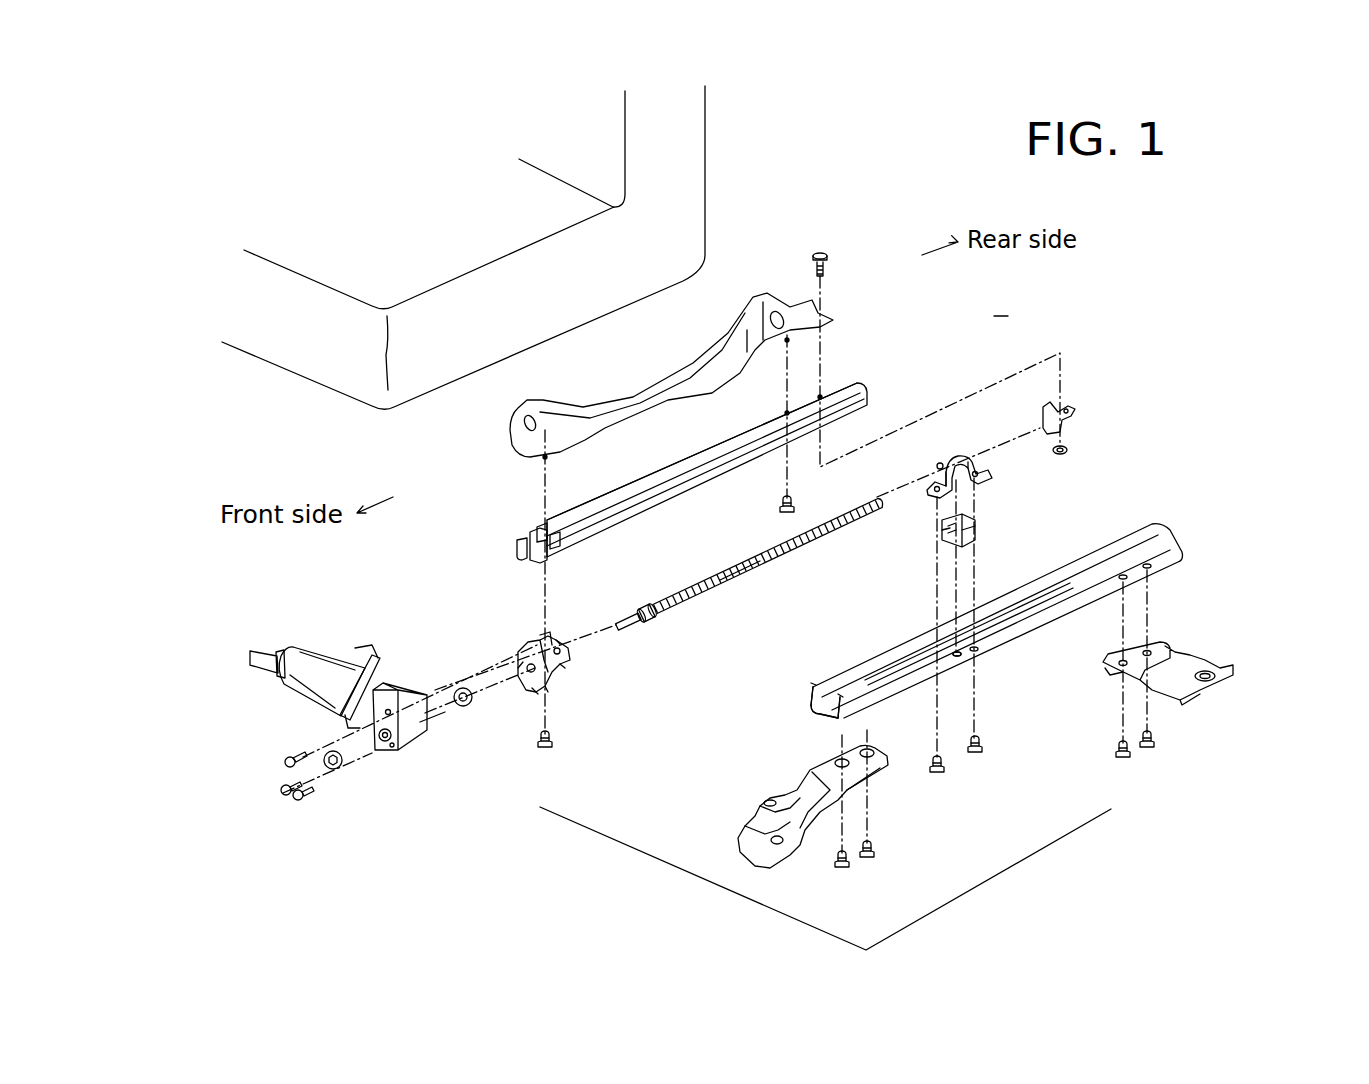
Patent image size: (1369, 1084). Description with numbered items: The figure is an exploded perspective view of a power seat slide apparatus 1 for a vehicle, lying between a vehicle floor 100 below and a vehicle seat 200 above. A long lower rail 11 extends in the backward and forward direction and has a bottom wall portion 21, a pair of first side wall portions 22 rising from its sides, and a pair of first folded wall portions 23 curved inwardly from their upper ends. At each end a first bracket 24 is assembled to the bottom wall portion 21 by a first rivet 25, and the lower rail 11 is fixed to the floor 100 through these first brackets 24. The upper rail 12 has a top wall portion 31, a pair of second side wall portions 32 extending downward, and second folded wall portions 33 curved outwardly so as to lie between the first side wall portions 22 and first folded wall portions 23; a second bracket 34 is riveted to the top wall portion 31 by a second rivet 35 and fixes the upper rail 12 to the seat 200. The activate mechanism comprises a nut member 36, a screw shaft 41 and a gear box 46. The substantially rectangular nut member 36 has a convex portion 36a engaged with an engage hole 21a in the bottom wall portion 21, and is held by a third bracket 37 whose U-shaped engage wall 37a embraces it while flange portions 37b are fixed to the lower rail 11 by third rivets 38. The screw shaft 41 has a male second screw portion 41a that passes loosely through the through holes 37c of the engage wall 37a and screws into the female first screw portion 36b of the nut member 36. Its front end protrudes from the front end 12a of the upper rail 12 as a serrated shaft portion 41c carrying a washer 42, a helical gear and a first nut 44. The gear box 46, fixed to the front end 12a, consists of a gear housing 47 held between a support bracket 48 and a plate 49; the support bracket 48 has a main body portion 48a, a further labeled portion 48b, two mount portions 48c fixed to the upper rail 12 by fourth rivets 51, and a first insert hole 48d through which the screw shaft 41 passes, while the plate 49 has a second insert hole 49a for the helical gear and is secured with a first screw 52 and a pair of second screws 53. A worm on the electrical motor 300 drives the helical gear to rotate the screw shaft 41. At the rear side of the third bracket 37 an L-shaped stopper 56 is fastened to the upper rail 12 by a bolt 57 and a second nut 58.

The power seat slide apparatus 1 is at (990, 329).
The lower rail 11 is at (1180, 523).
The upper rail 12 is at (858, 370).
The front end 12a is at (537, 527).
The bottom wall portion 21 is at (827, 722).
The engage hole 21a is at (968, 677).
The first side wall portions 22 is at (809, 694).
The first folded wall portions 23 is at (809, 687).
The first bracket 24 is at (807, 792).
The first rivet 25 is at (887, 857).
The top wall portion 31 is at (613, 493).
The second side wall portions 32 is at (527, 532).
The second folded wall portions 33 is at (517, 545).
The second bracket 34 is at (642, 377).
The second rivet 35 is at (782, 505).
The nut member 36 is at (973, 517).
The convex portion 36a is at (975, 540).
The first screw portion 36b is at (942, 540).
The third bracket 37 is at (957, 450).
The engage wall 37a is at (940, 463).
The flange portions 37b is at (980, 467).
The through holes 37c is at (973, 457).
The third rivets 38 is at (993, 757).
The screw shaft 41 is at (691, 611).
The second screw portion 41a is at (740, 563).
The serrated shaft portion 41c is at (637, 625).
The washer 42 is at (460, 690).
The first nut 44 is at (345, 767).
The gear box 46 is at (419, 681).
The gear housing 47 is at (445, 718).
The support bracket 48 is at (533, 633).
The main body portion 48a is at (520, 643).
The bracket side portion 48b is at (520, 655).
The mount portions 48c is at (555, 633).
The first insert hole 48d is at (532, 690).
The plate 49 is at (387, 757).
The second insert hole 49a is at (412, 745).
The fourth rivets 51 is at (555, 747).
The first screw 52 is at (290, 757).
The second screws 53 is at (298, 800).
The stopper 56 is at (1047, 413).
The bolt 57 is at (828, 259).
The second nut 58 is at (1067, 453).
The vehicle floor 100 is at (660, 858).
The vehicle seat 200 is at (680, 155).
The electrical motor 300 is at (327, 641).